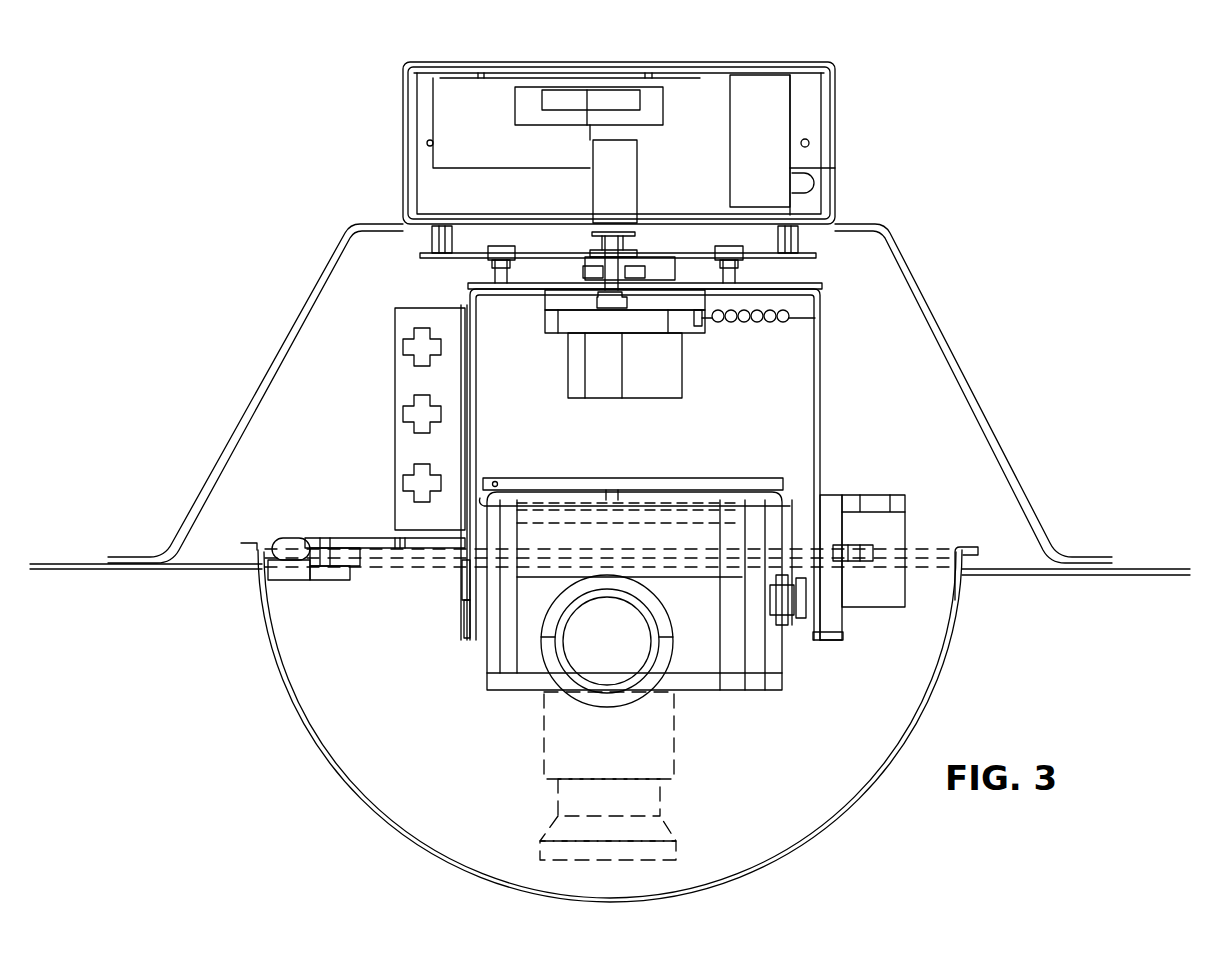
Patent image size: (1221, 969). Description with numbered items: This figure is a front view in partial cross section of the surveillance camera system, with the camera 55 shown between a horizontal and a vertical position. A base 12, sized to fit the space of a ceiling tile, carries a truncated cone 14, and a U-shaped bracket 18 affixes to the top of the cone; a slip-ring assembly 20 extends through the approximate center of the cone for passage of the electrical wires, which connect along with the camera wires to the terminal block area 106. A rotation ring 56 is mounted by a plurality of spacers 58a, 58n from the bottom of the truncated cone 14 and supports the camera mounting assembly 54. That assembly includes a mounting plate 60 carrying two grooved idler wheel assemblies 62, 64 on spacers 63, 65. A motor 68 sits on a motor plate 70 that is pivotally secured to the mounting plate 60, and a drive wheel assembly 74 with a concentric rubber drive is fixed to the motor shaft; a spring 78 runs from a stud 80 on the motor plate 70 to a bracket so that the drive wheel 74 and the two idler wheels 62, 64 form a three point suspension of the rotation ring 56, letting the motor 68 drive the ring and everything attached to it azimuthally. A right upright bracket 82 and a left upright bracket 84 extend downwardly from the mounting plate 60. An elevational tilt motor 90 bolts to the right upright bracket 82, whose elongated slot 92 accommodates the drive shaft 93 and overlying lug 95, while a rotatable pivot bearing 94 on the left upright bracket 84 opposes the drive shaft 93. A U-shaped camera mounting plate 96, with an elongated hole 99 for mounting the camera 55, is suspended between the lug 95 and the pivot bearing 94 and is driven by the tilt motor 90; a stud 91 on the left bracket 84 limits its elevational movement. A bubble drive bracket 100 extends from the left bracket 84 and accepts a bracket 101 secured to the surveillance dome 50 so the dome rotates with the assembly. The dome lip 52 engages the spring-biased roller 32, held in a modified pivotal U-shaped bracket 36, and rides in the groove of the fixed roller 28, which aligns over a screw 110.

The base 12 is at (610, 587).
The truncated cone 14 is at (930, 312).
The U-shaped bracket 18 is at (828, 63).
The slip-ring assembly 20 is at (638, 180).
The fixed roller 28 is at (905, 540).
The spring-biased roller 32 is at (341, 540).
The modified pivotal U-shaped bracket 36 is at (306, 538).
The surveillance dome 50 is at (270, 663).
The lip 52 is at (990, 537).
The camera mounting assembly 54 is at (460, 643).
The camera 55 is at (674, 766).
The rotation ring 56 is at (814, 258).
The spacer 58a is at (426, 246).
The spacer 58n is at (802, 246).
The mounting plate 60 is at (820, 290).
The grooved idler wheel assembly 62 is at (729, 245).
The spacer 63 is at (744, 270).
The grooved idler wheel assembly 64 is at (512, 244).
The spacer 65 is at (490, 267).
The motor 68 is at (656, 390).
The motor plate 70 is at (565, 300).
The drive wheel assembly 74 is at (640, 255).
The spring 78 is at (748, 323).
The stud 80 is at (698, 328).
The right upright bracket 82 is at (820, 416).
The left upright bracket 84 is at (468, 432).
The elevational tilt motor 90 is at (900, 522).
The stud 91 is at (468, 575).
The elongated slot 92 is at (830, 640).
The drive shaft 93 is at (798, 607).
The rotatable pivot bearing 94 is at (468, 597).
The lug 95 is at (800, 640).
The U-shaped camera mounting plate 96 is at (676, 484).
The elongated hole 99 is at (614, 492).
The bubble drive bracket 100 is at (318, 576).
The bracket 101 is at (285, 572).
The terminal block area 106 is at (780, 144).
The screw 110 is at (395, 447).